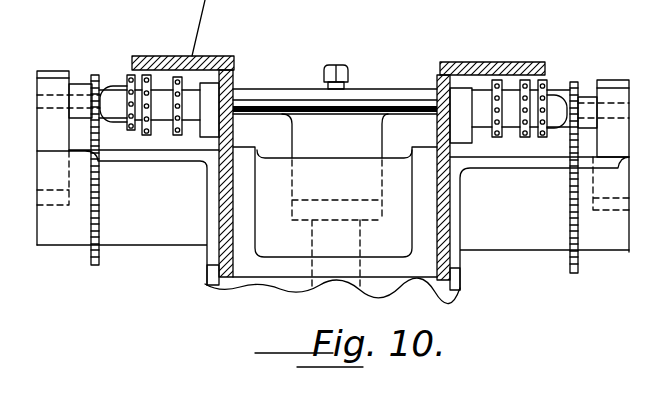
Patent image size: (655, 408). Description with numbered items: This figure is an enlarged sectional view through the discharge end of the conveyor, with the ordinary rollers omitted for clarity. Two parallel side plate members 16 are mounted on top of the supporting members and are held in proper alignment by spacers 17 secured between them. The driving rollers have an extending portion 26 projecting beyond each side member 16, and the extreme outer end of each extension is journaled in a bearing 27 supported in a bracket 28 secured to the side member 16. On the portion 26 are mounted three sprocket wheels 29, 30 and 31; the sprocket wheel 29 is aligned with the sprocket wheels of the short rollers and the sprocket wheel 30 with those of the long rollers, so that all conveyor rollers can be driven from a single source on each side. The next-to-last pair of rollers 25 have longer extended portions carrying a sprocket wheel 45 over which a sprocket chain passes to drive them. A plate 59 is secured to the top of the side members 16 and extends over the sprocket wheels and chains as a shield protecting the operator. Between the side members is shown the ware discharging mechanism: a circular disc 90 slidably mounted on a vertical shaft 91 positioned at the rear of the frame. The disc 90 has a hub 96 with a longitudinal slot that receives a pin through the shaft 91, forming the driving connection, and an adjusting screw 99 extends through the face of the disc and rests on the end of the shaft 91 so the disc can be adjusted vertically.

The side plate members 16 is at (229, 82).
The spacers 17 is at (265, 268).
The rollers 25 is at (307, 110).
The extending portion 26 is at (121, 104).
The bearing 27 is at (43, 71).
The bracket 28 is at (146, 160).
The sprocket wheel 29 is at (185, 78).
The sprocket wheel 30 is at (152, 77).
The sprocket wheel 31 is at (95, 75).
The sprocket wheel 45 is at (128, 76).
The plate 59 is at (462, 62).
The disc 90 is at (373, 97).
The vertical shaft 91 is at (352, 242).
The hub 96 is at (383, 147).
The adjusting screw 99 is at (333, 83).